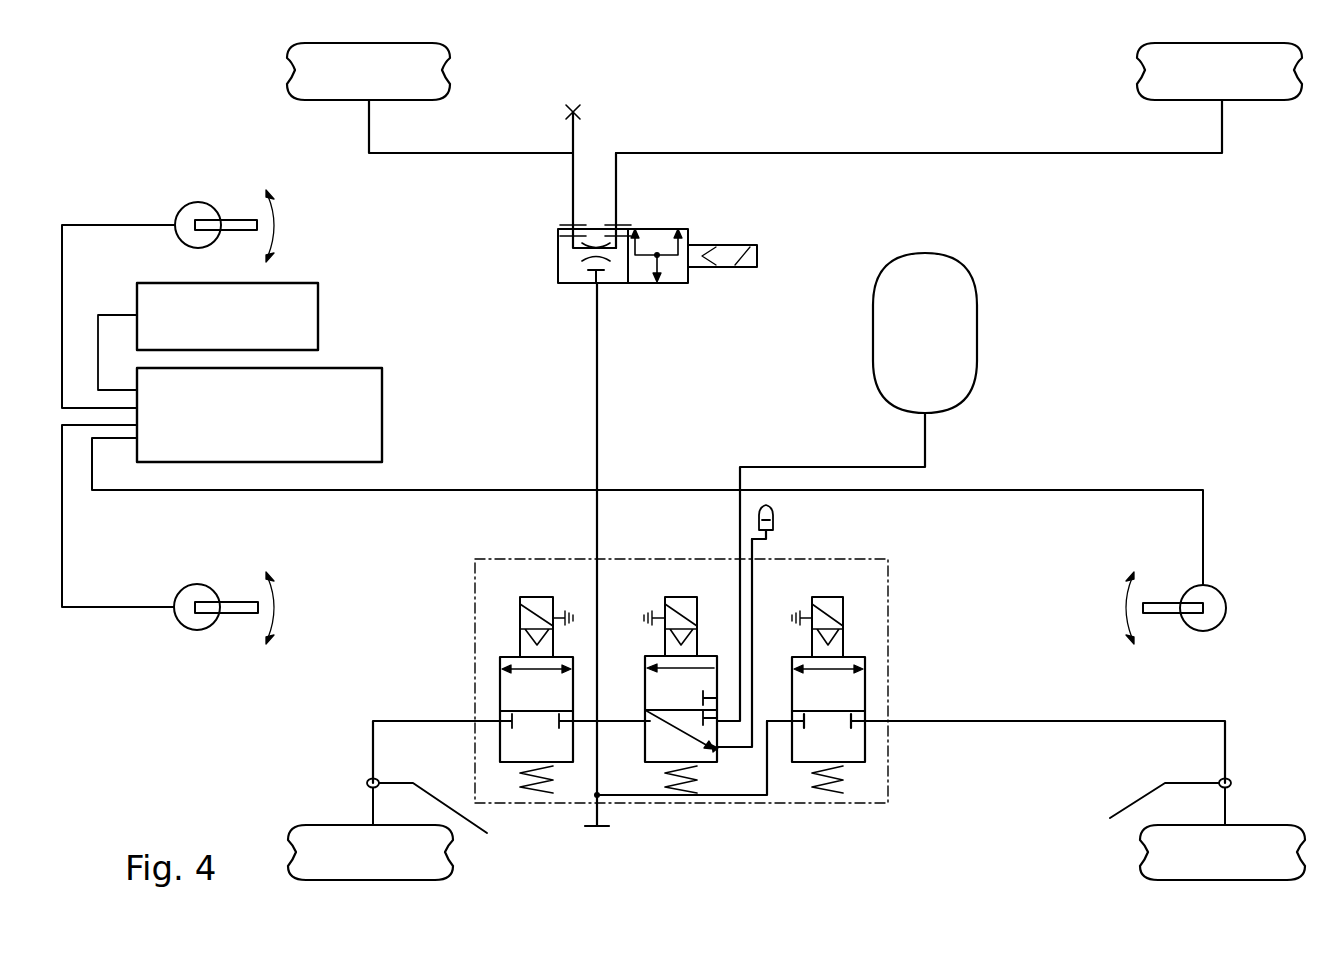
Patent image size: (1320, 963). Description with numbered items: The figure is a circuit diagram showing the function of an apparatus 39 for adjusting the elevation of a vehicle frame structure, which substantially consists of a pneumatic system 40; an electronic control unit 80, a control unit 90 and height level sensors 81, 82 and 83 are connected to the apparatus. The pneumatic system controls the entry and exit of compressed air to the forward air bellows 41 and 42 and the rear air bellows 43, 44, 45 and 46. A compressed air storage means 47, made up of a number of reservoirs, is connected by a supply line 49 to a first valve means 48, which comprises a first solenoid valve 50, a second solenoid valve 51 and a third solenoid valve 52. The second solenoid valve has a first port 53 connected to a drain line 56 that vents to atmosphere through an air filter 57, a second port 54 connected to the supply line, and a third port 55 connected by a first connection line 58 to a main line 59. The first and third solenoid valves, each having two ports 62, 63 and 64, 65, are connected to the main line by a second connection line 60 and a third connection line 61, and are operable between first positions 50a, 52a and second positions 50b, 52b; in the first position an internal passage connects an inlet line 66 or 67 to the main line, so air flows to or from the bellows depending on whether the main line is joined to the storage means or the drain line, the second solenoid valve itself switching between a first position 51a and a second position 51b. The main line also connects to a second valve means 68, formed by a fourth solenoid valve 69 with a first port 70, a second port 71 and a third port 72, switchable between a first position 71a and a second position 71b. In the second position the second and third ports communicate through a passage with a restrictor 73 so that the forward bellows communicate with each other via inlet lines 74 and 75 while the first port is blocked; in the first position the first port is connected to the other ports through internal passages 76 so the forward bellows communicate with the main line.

The apparatus for adjusting the elevation of the vehicle frame structure 39 is at (1130, 383).
The pneumatic system 40 is at (865, 142).
The forward air bellows 41 is at (452, 72).
The forward air bellows 42 is at (1137, 72).
The rear air bellows 43 is at (436, 852).
The rear air bellows 44 is at (455, 853).
The rear air bellows 45 is at (1156, 852).
The rear air bellows 46 is at (1136, 858).
The compressed air storage means 47 is at (978, 336).
The first valve means 48 is at (889, 612).
The supply line 49 is at (836, 466).
The first solenoid valve 50 is at (511, 560).
The first position of first solenoid valve 50a is at (500, 692).
The second position of first solenoid valve 50b is at (500, 742).
The second solenoid valve 51 is at (642, 560).
The first position of second solenoid valve 51a is at (647, 668).
The second position of second solenoid valve 51b is at (647, 758).
The third solenoid valve 52 is at (789, 560).
The first position of third solenoid valve 52a is at (866, 690).
The second position of third solenoid valve 52b is at (866, 744).
The first port 53 is at (729, 761).
The second port 54 is at (734, 646).
The third port 55 is at (633, 708).
The drain line 56 is at (752, 603).
The air filter 57 is at (776, 515).
The first connection line 58 is at (612, 732).
The main line 59 is at (603, 405).
The second connection line 60 is at (587, 724).
The third connection line 61 is at (660, 796).
The port of first solenoid valve 62 is at (490, 720).
The port of first solenoid valve 63 is at (584, 712).
The port of third solenoid valve 64 is at (783, 711).
The port of third solenoid valve 65 is at (1038, 739).
The inlet line 66 is at (371, 758).
The inlet line 67 is at (1225, 753).
The second valve means 68 is at (590, 321).
The fourth solenoid valve 69 is at (547, 224).
The first port 70 is at (609, 290).
The second port 71 is at (579, 176).
The first position of fourth solenoid valve 71a is at (675, 283).
The second position of fourth solenoid valve 71b is at (573, 280).
The third port 72 is at (626, 200).
The restrictor 73 is at (580, 250).
The inlet line 74 is at (487, 150).
The inlet line 75 is at (970, 150).
The internal passages 76 is at (696, 245).
The electronic control unit 80 is at (384, 412).
The height level sensor 81 is at (201, 584).
The height level sensor 82 is at (1204, 633).
The height level sensor 83 is at (200, 203).
The control unit 90 is at (320, 318).